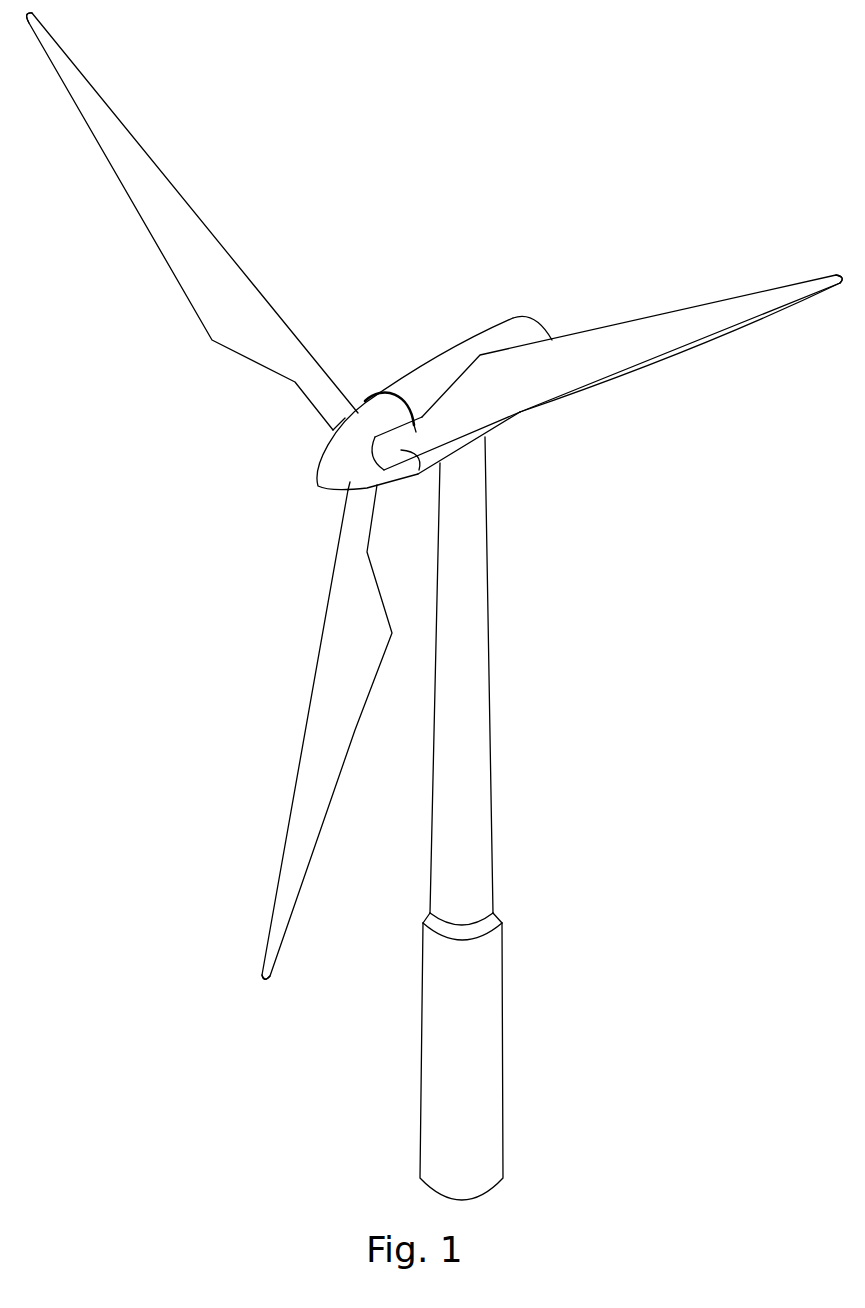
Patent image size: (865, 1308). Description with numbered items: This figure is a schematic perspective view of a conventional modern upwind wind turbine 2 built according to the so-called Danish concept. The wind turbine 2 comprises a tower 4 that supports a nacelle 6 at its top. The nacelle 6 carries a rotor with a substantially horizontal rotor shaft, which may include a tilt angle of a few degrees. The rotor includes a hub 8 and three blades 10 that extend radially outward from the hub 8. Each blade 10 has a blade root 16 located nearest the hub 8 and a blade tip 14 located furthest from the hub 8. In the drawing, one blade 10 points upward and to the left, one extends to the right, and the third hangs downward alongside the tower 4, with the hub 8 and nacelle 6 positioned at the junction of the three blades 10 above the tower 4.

The wind turbine 2 is at (600, 757).
The tower 4 is at (480, 678).
The nacelle 6 is at (427, 378).
The hub 8 is at (333, 463).
The blade 10 is at (223, 315).
The blade tip 14 is at (72, 73).
The blade root 16 is at (340, 418).